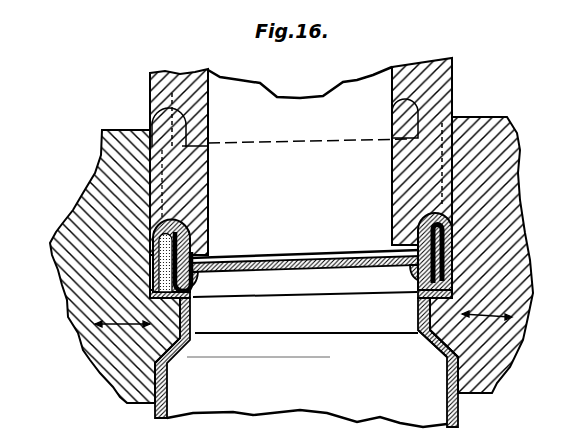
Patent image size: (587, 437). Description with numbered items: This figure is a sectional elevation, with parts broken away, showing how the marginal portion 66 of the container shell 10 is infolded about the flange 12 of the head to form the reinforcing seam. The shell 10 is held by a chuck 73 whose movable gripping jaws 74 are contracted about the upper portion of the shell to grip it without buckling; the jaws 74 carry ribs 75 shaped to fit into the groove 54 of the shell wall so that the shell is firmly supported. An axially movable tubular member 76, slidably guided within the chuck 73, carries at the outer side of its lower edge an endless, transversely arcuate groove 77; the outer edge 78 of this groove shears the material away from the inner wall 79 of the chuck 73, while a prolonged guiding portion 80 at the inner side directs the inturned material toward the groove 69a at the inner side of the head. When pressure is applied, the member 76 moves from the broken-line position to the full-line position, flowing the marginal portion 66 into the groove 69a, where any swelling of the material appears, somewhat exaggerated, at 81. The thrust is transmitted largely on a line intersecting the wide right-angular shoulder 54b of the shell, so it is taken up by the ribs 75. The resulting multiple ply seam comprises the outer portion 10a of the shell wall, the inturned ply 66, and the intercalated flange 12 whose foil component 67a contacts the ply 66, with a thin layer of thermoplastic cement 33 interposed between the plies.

The shell 10 is at (458, 411).
The outer portion of the shell wall 10a is at (154, 270).
The flange 12 is at (166, 246).
The thermoplastic cement film 33 is at (440, 265).
The groove 54 is at (185, 322).
The ledge portion 54b is at (182, 301).
The marginal portion 66 is at (147, 130).
The foil component 67a is at (196, 278).
The groove 69a is at (417, 273).
The chuck 73 is at (514, 317).
The gripping jaws 74 is at (72, 213).
The ribs 75 is at (430, 337).
The tubular member 76 is at (437, 83).
The groove 77 is at (453, 182).
The edge 78 is at (157, 226).
The inner wall 79 is at (150, 190).
The guiding portion 80 is at (198, 258).
The enlargement 81 is at (188, 281).